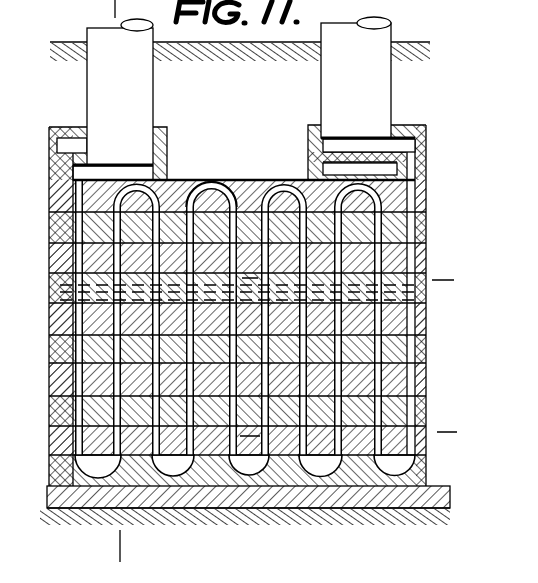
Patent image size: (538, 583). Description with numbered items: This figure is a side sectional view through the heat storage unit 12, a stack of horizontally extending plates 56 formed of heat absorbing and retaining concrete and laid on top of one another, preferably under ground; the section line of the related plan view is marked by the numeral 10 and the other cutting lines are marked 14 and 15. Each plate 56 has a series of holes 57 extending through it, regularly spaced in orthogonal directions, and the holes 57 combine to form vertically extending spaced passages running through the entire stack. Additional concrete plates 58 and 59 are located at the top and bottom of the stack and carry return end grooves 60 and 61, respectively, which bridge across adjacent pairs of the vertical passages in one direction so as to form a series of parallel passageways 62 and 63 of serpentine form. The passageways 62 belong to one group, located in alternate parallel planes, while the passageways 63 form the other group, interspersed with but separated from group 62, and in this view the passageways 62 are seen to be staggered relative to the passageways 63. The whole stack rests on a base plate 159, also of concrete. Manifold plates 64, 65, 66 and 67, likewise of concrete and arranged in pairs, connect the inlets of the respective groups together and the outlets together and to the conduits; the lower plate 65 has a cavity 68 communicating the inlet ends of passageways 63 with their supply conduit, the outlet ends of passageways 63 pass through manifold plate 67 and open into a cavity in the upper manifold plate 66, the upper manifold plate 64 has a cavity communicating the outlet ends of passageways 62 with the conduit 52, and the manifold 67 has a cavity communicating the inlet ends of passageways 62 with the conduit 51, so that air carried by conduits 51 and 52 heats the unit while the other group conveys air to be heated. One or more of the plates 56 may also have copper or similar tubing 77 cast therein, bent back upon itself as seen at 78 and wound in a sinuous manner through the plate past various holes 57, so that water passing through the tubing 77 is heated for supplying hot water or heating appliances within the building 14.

The section line 10- 10 is at (110, 7).
The heat storage unit 12 is at (44, 338).
The building 14 is at (447, 411).
The section line 15- 15 is at (447, 279).
The conduit 51 is at (96, 88).
The conduit 52 is at (386, 37).
The plates 56 is at (421, 243).
The holes 57 is at (418, 346).
The top plate 58 is at (420, 194).
The bottom plate 59 is at (56, 481).
The return end grooves 60 is at (265, 181).
The return end grooves 61 is at (326, 475).
The passageways 62 is at (210, 183).
The passageways 63 is at (62, 457).
The upper manifold plate 64 is at (391, 134).
The lower manifold plate 65 is at (420, 161).
The upper manifold plate 66 is at (158, 140).
The manifold plate 67 is at (166, 162).
The cavity 68 is at (330, 172).
The tubing 77 is at (62, 316).
The bent-back portion of tubing 78 is at (62, 297).
The base plate 159 is at (366, 507).